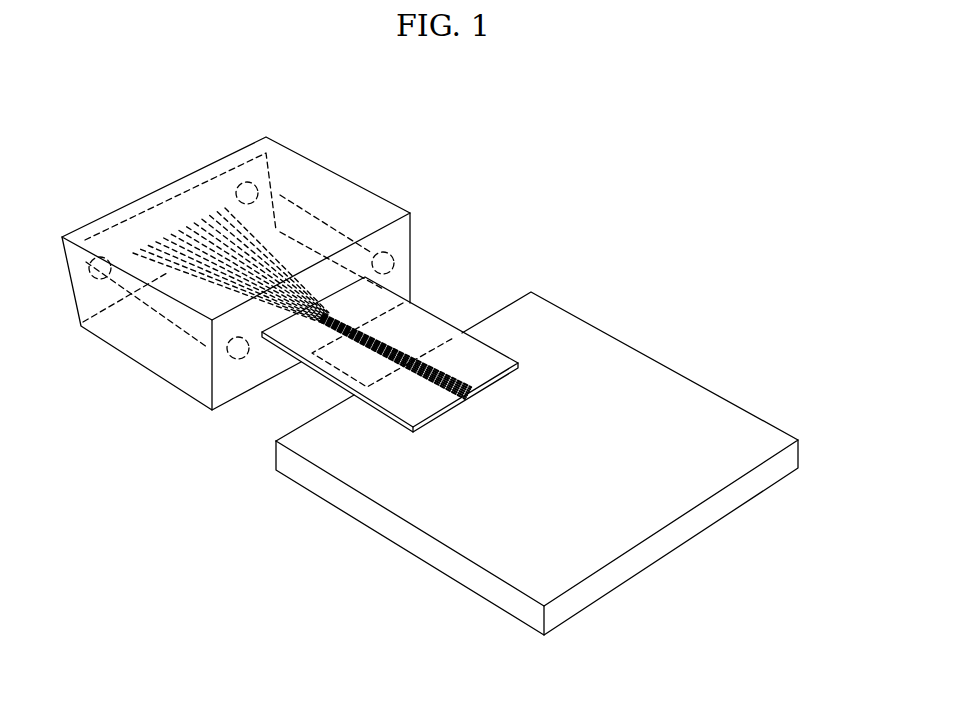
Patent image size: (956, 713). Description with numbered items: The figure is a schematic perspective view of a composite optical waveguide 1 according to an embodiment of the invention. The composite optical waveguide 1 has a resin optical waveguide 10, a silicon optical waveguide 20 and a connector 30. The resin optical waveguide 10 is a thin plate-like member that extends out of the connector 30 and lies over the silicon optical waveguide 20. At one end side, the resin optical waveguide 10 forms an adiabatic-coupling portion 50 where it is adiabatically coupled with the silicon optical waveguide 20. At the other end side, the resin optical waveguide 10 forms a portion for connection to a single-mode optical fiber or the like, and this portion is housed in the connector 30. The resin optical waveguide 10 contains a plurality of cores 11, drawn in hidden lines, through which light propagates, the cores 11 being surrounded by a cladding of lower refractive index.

The composite optical waveguide 1 is at (717, 192).
The resin optical waveguide 10 is at (443, 311).
The cores 11 is at (362, 353).
The silicon optical waveguide 20 is at (656, 384).
The connector 30 is at (331, 193).
The adiabatic-coupling portion 50 is at (475, 360).